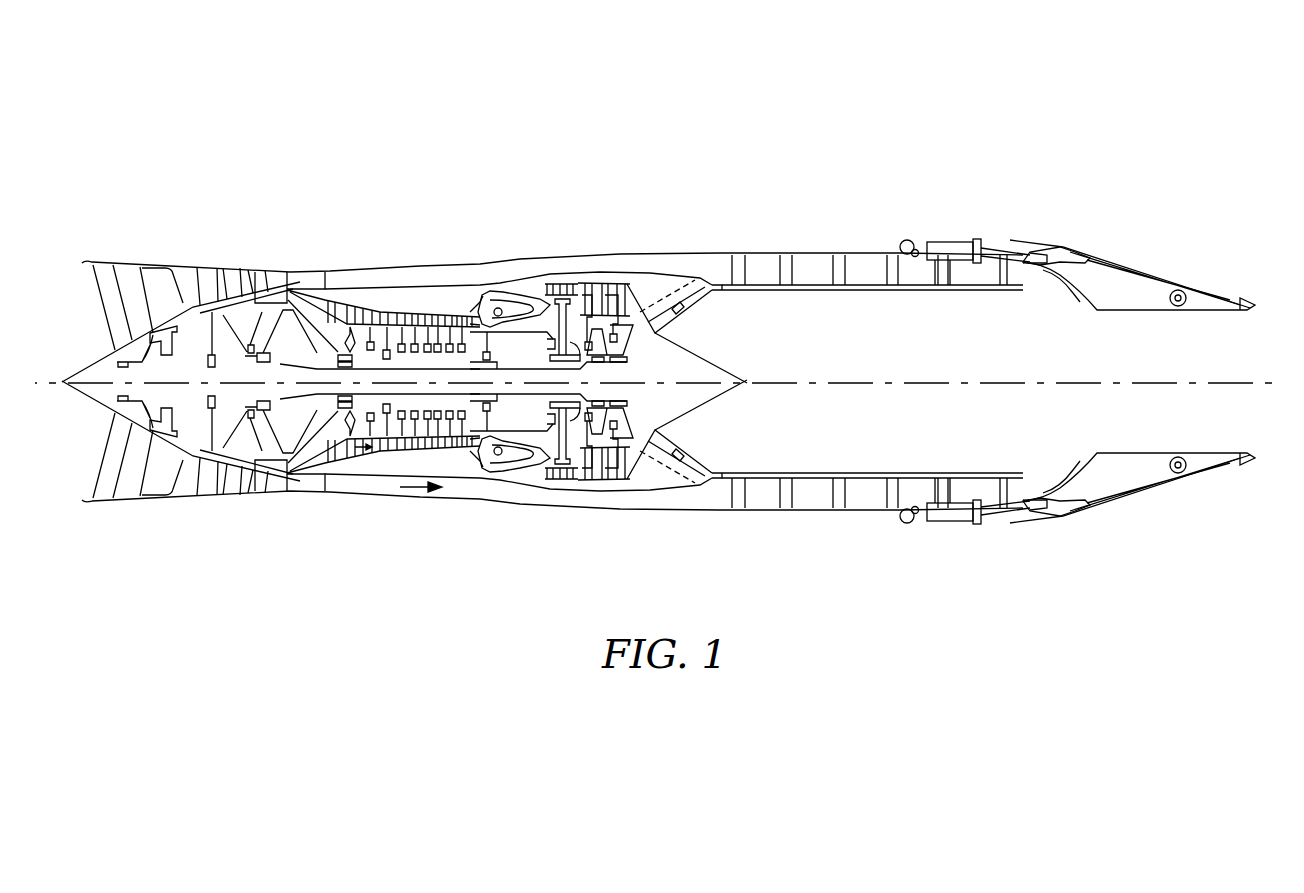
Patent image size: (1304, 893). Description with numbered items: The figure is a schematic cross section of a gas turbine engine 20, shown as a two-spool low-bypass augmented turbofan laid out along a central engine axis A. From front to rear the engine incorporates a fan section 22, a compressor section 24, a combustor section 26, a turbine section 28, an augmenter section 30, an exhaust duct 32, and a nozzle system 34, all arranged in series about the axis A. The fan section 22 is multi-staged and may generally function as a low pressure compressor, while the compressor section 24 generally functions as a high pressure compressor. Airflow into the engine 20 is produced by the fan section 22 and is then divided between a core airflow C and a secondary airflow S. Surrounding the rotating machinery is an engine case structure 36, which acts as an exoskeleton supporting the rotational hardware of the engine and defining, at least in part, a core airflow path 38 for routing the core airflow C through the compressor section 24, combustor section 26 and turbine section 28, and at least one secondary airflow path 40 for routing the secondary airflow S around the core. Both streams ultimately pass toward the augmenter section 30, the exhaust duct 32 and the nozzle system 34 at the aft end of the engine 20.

The gas turbine engine 20 is at (922, 88).
The fan section 22 is at (285, 190).
The compressor section 24 is at (489, 190).
The combustor section 26 is at (558, 190).
The turbine section 28 is at (632, 190).
The augmenter section 30 is at (755, 190).
The exhaust duct 32 is at (1015, 190).
The nozzle system 34 is at (1252, 190).
The engine case structure 36 is at (497, 517).
The core airflow path 38 is at (287, 492).
The secondary airflow path 40 is at (375, 484).
The central engine axis A is at (933, 384).
The core airflow C is at (366, 462).
The secondary airflow S is at (422, 490).